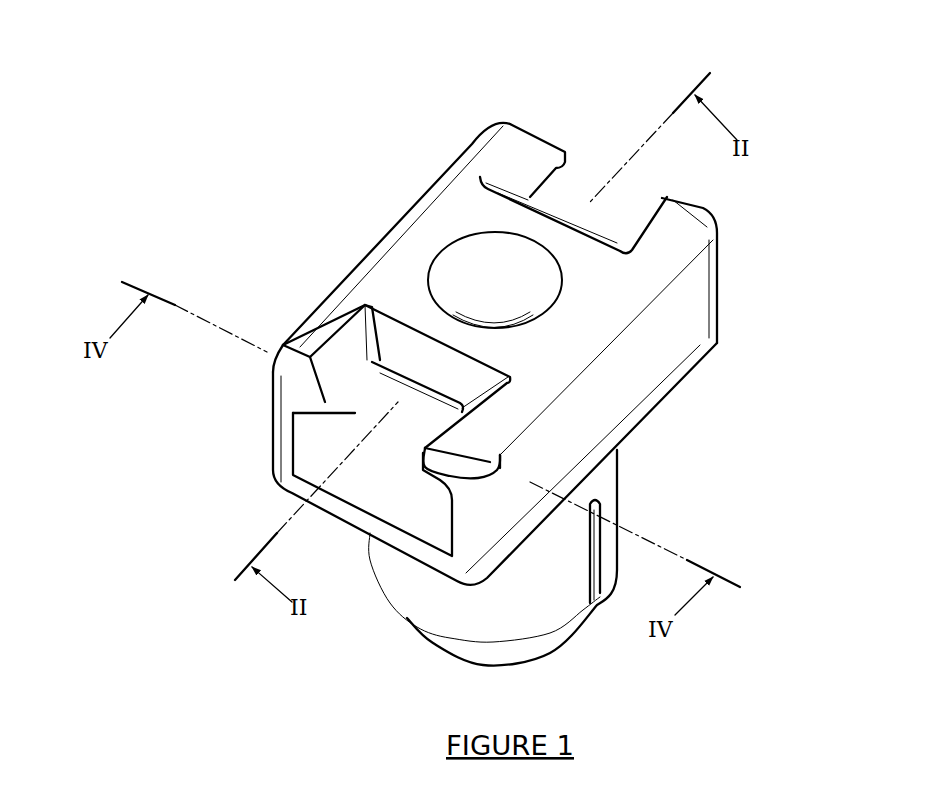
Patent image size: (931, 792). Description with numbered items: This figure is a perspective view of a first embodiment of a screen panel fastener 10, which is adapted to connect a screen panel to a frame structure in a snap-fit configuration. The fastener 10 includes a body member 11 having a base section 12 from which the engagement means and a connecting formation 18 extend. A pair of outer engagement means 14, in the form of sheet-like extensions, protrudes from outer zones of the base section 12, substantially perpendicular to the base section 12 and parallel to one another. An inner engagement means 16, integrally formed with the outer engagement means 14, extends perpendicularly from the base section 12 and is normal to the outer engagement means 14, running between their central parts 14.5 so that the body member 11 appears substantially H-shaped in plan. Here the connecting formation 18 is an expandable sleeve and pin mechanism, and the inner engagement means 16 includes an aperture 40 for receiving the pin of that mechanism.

The screen panel fastener 10 is at (176, 152).
The body member 11 is at (655, 300).
The base section 12 is at (415, 543).
The outer engagement means 14 is at (496, 150).
The central parts of the outer engagement means 14.5 is at (650, 375).
The inner engagement means 16 is at (572, 212).
The connecting formation 18 is at (545, 605).
The aperture 40 is at (483, 263).